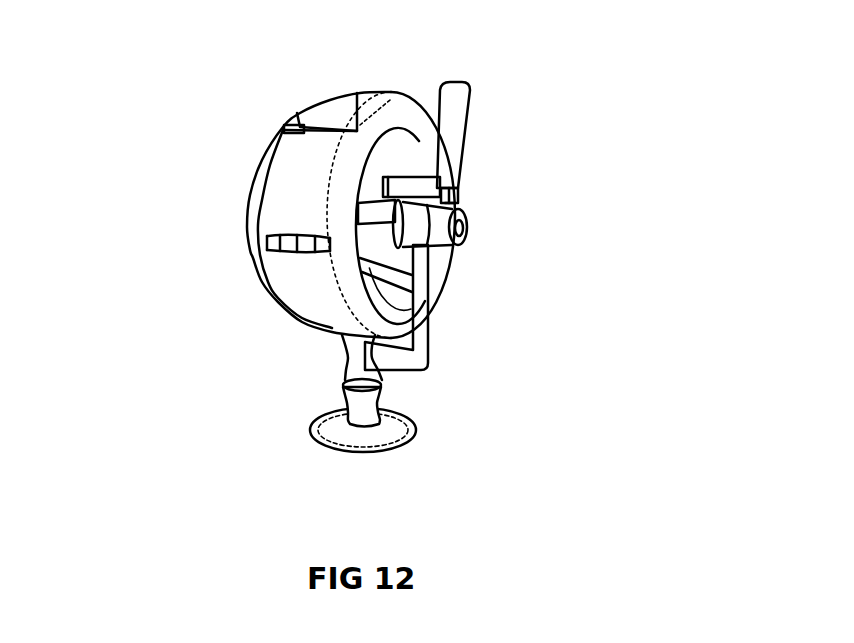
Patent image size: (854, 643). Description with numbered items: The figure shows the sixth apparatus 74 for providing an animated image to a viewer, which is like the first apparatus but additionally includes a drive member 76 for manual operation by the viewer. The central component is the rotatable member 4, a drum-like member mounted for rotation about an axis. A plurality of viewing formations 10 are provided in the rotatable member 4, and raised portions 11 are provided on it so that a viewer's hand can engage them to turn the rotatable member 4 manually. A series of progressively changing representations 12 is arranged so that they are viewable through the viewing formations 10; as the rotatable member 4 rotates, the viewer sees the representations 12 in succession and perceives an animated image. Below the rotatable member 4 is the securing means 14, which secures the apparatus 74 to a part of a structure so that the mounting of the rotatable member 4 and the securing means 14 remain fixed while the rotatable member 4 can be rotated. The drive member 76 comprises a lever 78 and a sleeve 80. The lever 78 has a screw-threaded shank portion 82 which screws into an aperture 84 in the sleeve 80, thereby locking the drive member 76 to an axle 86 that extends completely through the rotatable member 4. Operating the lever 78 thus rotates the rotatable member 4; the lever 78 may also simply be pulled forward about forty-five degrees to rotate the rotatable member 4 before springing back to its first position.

The sixth apparatus 74 is at (362, 249).
The raised portions 11 is at (343, 110).
The viewing formations 10 is at (283, 242).
The rotatable member 4 is at (253, 270).
The progressively changing representations 12 is at (390, 258).
The securing means 14 is at (417, 447).
The lever 78 is at (460, 110).
The drive member 76 is at (495, 213).
The screw-threaded shank portion 82 is at (457, 192).
The aperture 84 is at (460, 203).
The sleeve 80 is at (437, 227).
The axle 86 is at (380, 213).